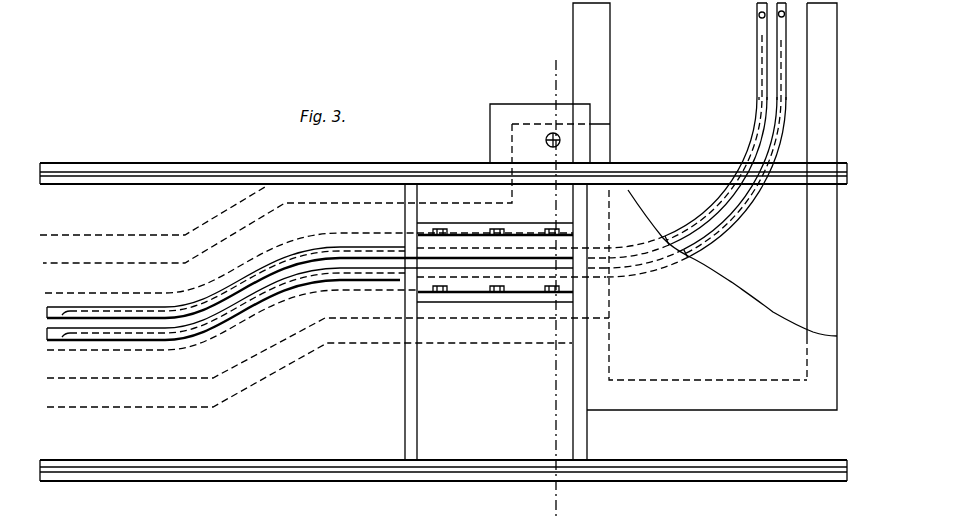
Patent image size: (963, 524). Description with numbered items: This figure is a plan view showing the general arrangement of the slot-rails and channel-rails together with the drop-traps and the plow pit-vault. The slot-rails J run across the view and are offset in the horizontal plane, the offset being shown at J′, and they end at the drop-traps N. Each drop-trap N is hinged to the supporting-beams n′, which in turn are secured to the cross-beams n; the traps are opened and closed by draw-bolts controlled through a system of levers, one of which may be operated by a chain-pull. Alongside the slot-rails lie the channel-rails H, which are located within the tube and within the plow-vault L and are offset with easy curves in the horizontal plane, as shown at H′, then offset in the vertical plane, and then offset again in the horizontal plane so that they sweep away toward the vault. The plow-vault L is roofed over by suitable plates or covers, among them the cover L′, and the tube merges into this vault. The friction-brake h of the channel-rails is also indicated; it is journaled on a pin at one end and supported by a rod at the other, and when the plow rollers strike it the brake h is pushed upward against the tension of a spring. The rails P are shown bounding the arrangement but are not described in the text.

The platform rails P is at (307, 170).
The slot-rail J is at (50, 310).
The horizontal offset of slot-rail J′ is at (261, 268).
The channel-rail H is at (125, 313).
The horizontal offset of channel-rail H′ is at (303, 258).
The friction-brake h is at (761, 47).
The cross-beam n is at (577, 222).
The supporting-beam n′ is at (481, 227).
The drop-trap N is at (495, 264).
The plow-vault L is at (712, 206).
The vault cover L′ is at (708, 285).